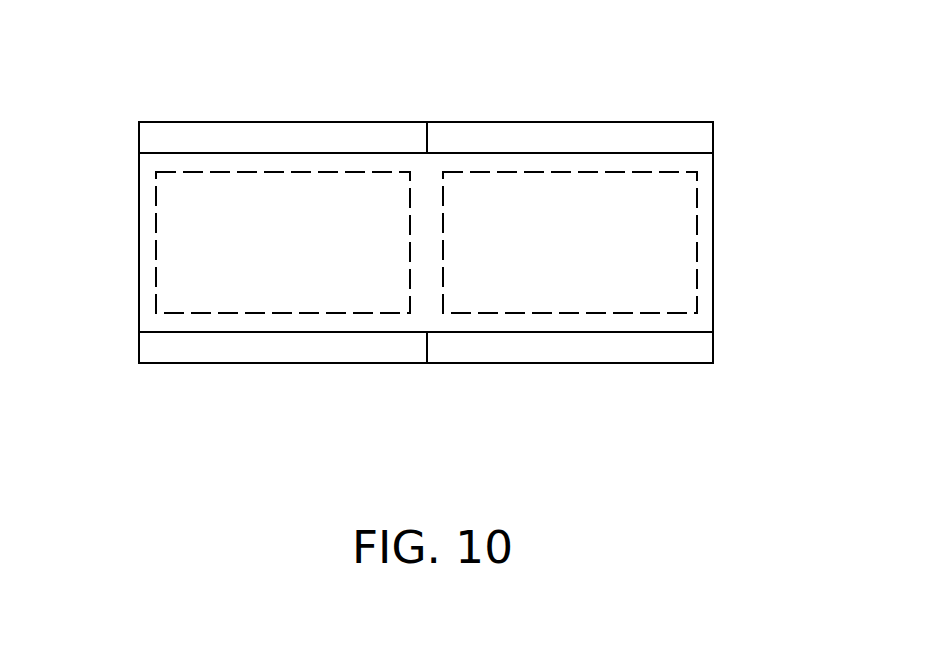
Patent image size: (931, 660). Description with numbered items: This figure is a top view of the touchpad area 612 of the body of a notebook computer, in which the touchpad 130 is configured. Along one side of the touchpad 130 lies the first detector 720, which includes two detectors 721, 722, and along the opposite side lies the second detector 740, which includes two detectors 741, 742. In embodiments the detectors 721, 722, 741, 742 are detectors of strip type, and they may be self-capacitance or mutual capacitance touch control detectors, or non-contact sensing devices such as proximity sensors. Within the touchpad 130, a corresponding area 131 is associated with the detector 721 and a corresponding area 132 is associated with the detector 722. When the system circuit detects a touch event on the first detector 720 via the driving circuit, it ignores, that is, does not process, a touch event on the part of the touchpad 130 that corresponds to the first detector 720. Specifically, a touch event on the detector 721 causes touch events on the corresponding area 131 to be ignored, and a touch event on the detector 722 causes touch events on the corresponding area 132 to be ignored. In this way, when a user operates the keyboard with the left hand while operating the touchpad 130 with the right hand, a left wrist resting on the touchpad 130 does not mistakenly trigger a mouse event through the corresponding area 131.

The touchpad area 612 is at (686, 392).
The first detector 720 is at (480, 66).
The detector 721 is at (390, 143).
The detector 722 is at (453, 140).
The second detector 740 is at (480, 418).
The detector 741 is at (390, 345).
The detector 742 is at (453, 348).
The touchpad 130 is at (705, 247).
The corresponding area 131 is at (157, 201).
The corresponding area 132 is at (697, 200).